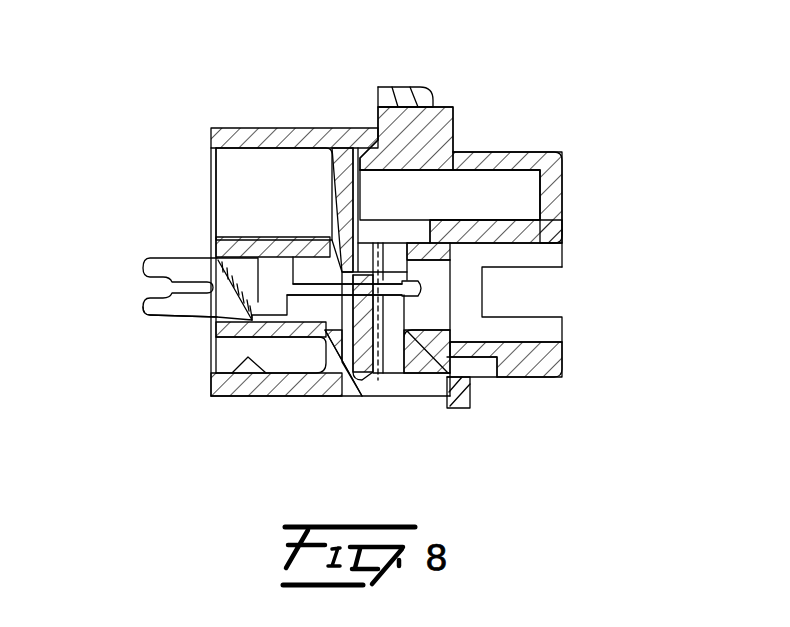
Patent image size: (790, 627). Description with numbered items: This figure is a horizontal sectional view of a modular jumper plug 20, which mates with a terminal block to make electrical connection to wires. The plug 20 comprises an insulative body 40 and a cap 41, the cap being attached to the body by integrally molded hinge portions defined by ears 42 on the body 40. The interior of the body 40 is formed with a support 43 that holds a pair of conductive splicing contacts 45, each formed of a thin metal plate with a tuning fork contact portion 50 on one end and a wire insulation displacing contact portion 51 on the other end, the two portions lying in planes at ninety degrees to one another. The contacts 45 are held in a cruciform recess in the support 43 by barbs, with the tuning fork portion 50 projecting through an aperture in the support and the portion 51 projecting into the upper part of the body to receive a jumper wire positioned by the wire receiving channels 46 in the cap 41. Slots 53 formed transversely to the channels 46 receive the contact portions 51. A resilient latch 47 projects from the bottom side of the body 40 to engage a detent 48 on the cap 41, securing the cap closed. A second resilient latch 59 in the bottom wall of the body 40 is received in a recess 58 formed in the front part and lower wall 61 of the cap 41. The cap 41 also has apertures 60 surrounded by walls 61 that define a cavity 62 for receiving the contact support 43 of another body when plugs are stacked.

The modular jumper plug 20 is at (590, 91).
The insulative body 40 is at (232, 126).
The cap 41 is at (456, 120).
The ears 42 is at (388, 90).
The support 43 is at (232, 338).
The splicing contact 45 is at (184, 254).
The wire receiving channel 46 is at (383, 385).
The resilient latch 47 is at (467, 404).
The detent 48 is at (432, 386).
The tuning fork contact portion 50 is at (168, 317).
The wire insulation displacing contact portion 51 is at (301, 262).
The slot 53 is at (388, 280).
The recess 58 is at (492, 378).
The second resilient latch 59 is at (232, 397).
The aperture 60 is at (398, 355).
The wall 61 is at (567, 166).
The cavity 62 is at (553, 245).